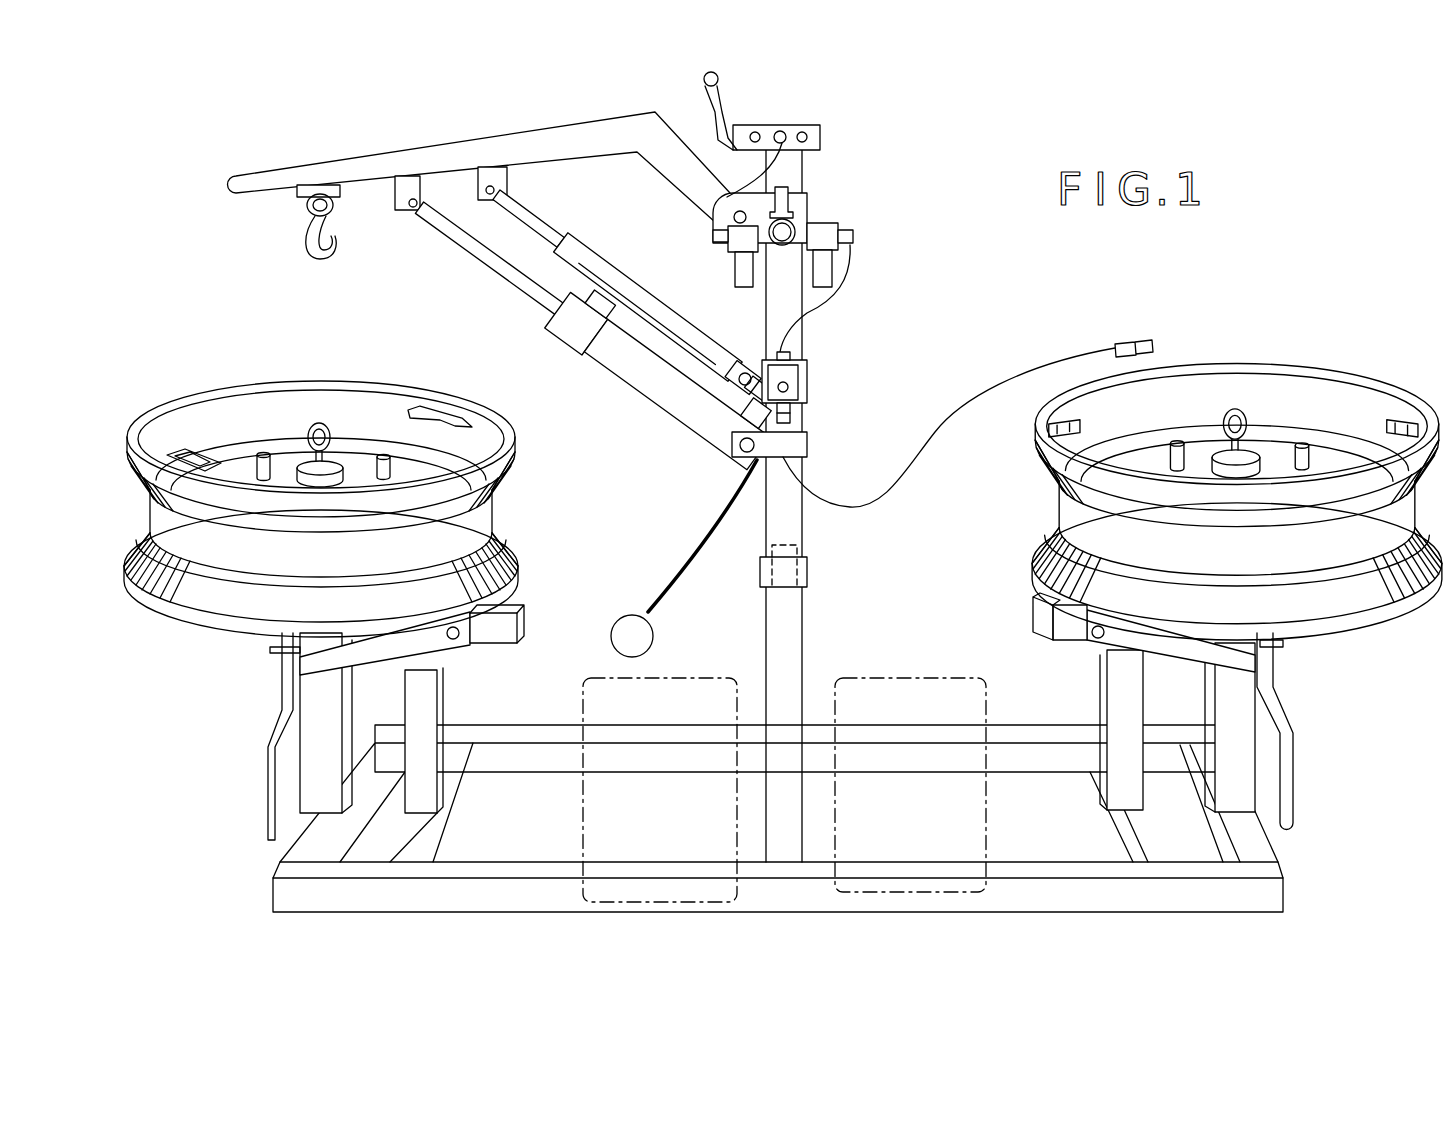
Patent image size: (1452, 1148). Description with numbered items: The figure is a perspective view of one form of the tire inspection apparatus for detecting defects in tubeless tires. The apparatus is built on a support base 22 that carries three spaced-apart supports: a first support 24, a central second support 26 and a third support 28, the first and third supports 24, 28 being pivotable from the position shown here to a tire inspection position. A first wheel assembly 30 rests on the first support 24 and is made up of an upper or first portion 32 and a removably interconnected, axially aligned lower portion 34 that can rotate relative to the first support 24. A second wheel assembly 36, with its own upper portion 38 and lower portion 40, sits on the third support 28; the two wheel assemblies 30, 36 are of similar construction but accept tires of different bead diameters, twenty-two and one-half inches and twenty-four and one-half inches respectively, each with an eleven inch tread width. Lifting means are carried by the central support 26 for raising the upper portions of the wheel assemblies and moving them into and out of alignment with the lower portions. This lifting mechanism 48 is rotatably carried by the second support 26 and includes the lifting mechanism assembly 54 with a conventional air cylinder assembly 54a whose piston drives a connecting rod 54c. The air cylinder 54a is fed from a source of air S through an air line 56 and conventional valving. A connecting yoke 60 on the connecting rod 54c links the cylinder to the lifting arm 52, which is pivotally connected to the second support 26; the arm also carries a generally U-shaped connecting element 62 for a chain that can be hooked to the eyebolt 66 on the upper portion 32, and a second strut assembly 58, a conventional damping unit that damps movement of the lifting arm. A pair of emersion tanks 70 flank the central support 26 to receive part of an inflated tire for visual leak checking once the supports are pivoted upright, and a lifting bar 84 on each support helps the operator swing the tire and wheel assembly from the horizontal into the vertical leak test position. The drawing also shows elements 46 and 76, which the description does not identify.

The support base 22 is at (517, 912).
The first support 24 is at (775, 722).
The second support 26 is at (820, 629).
The third support 28 is at (1092, 704).
The first wheel assembly 30 is at (353, 490).
The upper or first portion 32 is at (497, 480).
The second or lower portion 34 is at (500, 552).
The second wheel assembly 36 is at (1190, 465).
The first or upper portion 38 is at (1237, 470).
The second or lower portion 40 is at (1237, 571).
The wheel lugs 46 is at (262, 452).
The lifting mechanism 48 is at (691, 287).
The lifting arm 52 is at (538, 130).
The lifting mechanism assembly 54 is at (570, 336).
The air cylinder assembly 54a is at (722, 460).
The connecting rod 54c is at (485, 252).
The air line 56 is at (693, 548).
The second strut assembly 58 is at (629, 263).
The connecting yoke 60 is at (402, 176).
The U-shaped connecting element 62 is at (322, 242).
The eyebolt 66 is at (318, 422).
The emersion tanks 70 is at (583, 802).
The wheel hub 76 is at (205, 548).
The lifting bar 84 is at (282, 695).
The source of air S is at (611, 634).